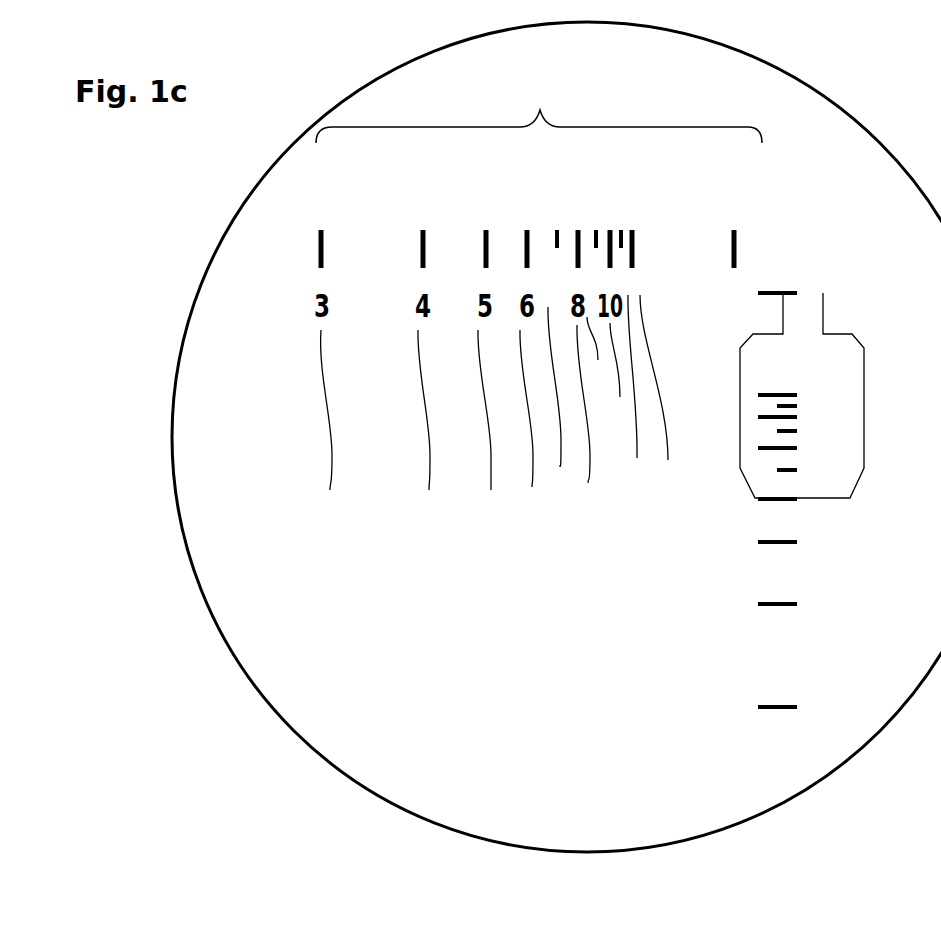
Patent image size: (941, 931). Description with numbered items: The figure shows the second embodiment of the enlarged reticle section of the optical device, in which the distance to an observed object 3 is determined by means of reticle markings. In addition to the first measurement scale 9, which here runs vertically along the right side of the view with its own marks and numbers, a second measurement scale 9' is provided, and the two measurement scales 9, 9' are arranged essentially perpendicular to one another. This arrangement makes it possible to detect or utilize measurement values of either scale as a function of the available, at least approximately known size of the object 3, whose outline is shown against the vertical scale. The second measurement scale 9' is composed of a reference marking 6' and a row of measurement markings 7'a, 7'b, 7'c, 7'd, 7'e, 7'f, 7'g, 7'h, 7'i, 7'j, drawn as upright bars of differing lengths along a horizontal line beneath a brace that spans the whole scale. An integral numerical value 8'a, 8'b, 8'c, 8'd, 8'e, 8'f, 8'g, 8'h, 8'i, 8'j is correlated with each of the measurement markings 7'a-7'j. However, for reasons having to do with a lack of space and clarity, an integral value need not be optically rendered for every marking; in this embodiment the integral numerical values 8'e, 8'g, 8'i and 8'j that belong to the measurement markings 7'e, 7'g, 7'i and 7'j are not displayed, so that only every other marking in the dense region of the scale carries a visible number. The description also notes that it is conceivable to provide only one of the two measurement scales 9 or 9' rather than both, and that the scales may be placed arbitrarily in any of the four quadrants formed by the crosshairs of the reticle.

The measurement scale 9' is at (539, 110).
The measurement marking 7'a is at (347, 219).
The measurement marking 7'b is at (410, 219).
The measurement marking 7'c is at (467, 218).
The measurement marking 7'd is at (507, 217).
The measurement marking 7'e is at (541, 207).
The measurement marking 7'f is at (567, 205).
The measurement marking 7'g is at (593, 208).
The measurement marking 7'h is at (623, 205).
The measurement marking 7'i is at (644, 208).
The measurement marking 7'j is at (661, 229).
The reference marking 6' is at (735, 218).
The integral numerical value 8'a is at (330, 432).
The integral numerical value 8'b is at (430, 432).
The integral numerical value 8'c is at (487, 432).
The integral numerical value 8'd is at (533, 432).
The integral numerical value 8'e is at (561, 404).
The integral numerical value 8'f is at (590, 421).
The integral numerical value 8'g is at (598, 354).
The integral numerical value 8'h is at (620, 376).
The integral numerical value 8'i is at (639, 393).
The integral numerical value 8'j is at (661, 393).
The object 3 is at (802, 395).
The measurement scale 9 is at (821, 497).